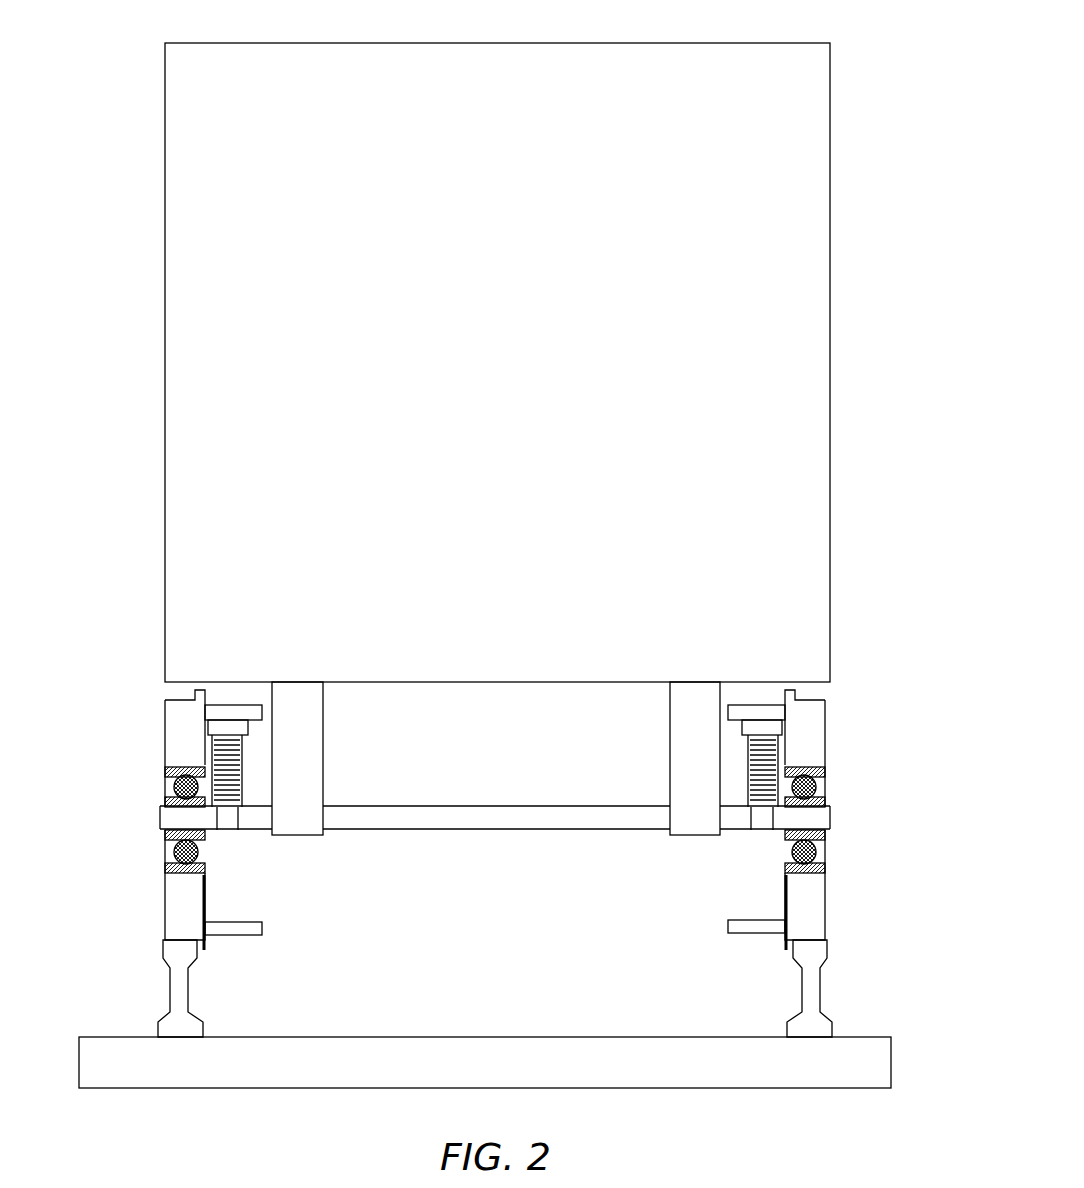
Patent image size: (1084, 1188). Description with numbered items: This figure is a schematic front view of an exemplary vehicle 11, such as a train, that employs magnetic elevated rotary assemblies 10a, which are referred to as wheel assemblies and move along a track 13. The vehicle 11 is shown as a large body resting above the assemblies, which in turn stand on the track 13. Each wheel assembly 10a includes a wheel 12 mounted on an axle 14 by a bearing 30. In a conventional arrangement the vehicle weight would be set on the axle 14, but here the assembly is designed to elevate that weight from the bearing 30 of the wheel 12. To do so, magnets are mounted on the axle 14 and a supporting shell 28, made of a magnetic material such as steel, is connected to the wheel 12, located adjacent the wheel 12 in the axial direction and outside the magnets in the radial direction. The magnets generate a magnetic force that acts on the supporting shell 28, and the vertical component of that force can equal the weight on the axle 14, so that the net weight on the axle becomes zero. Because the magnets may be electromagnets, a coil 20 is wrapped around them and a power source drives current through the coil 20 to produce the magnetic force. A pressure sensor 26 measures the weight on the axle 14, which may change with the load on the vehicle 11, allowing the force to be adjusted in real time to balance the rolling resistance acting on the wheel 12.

The vehicle 11 is at (888, 63).
The axle 14 is at (528, 829).
The magnetic elevated rotary assembly 10a is at (116, 727).
The wheel 12 is at (186, 693).
The bearing 30 is at (165, 772).
The pressure sensor 26 is at (166, 832).
The supporting shell 28 is at (262, 712).
The coil 20 is at (240, 770).
The track 13 is at (170, 985).